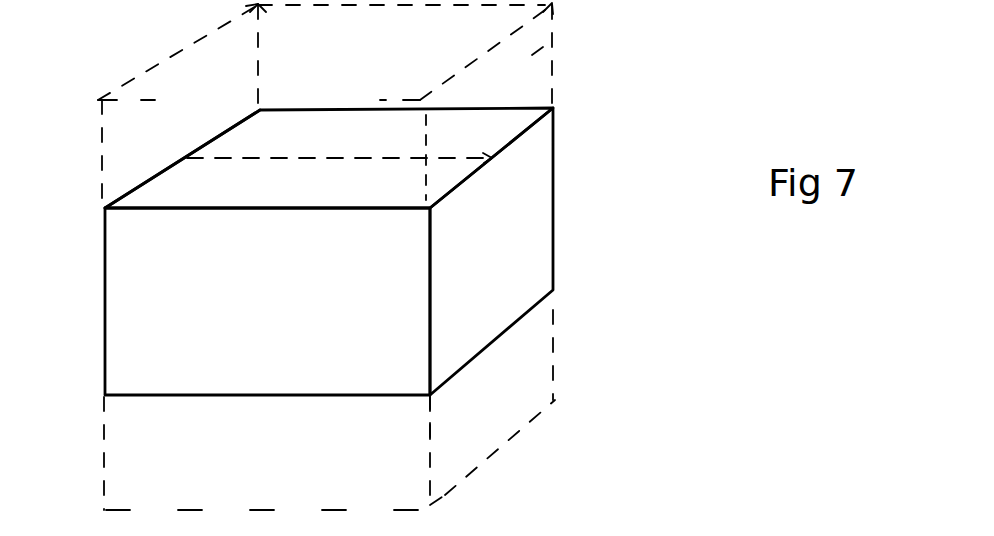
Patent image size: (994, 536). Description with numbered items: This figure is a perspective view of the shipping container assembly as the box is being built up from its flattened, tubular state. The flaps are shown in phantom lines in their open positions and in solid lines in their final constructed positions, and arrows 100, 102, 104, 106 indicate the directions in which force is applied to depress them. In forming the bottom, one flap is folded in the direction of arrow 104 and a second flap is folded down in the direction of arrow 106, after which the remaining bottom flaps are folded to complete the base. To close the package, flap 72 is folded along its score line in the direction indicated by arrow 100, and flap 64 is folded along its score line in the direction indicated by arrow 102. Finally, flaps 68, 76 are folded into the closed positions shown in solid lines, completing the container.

The flap 64 is at (187, 50).
The flap 72 is at (563, 40).
The flap 68 is at (315, 197).
The flap 76 is at (370, 151).
The arrow 100 is at (416, 170).
The arrow 102 is at (108, 168).
The arrow 104 is at (530, 331).
The arrow 106 is at (435, 483).